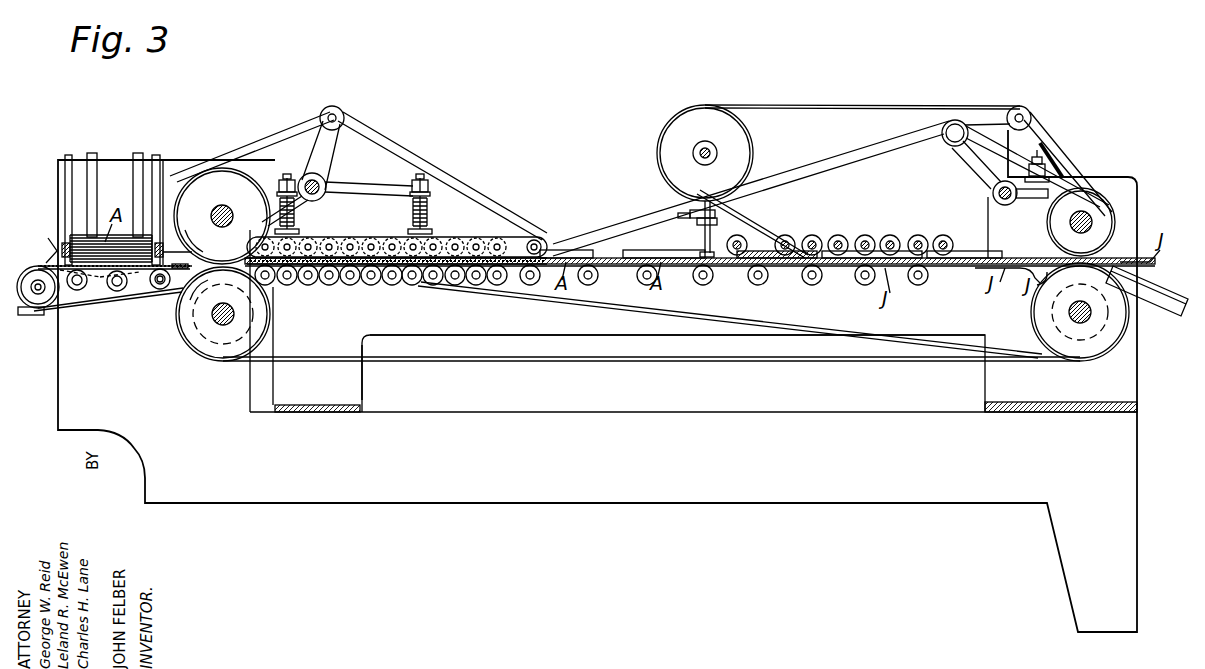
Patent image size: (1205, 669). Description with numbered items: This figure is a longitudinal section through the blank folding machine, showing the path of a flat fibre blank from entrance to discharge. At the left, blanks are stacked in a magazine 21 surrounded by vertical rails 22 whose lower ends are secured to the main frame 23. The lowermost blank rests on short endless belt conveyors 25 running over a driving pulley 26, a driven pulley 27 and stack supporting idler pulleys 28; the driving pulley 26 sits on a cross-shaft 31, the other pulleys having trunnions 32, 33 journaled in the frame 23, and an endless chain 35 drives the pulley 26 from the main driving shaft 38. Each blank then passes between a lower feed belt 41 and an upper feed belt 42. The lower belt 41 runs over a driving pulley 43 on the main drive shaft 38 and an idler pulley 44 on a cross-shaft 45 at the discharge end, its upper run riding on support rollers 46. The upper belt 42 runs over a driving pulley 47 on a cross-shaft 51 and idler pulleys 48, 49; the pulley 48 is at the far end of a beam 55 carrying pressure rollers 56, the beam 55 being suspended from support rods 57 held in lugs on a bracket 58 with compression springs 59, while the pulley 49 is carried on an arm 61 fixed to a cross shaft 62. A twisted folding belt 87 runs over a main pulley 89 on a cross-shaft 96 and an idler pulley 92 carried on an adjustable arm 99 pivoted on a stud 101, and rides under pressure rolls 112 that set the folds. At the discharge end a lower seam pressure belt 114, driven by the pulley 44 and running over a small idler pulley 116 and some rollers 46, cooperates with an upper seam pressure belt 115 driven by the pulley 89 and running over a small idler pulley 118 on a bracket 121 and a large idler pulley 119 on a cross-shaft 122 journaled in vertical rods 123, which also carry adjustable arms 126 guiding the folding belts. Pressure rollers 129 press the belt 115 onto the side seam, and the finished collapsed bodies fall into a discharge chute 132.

The magazine 21 is at (113, 158).
The rails 22 is at (68, 156).
The frame 23 is at (757, 490).
The endless belt conveyors 25 is at (42, 262).
The driving pulley 26 is at (36, 297).
The driven pulley 27 is at (157, 290).
The stack supporting idler pulleys 28 is at (72, 290).
The cross-shaft 31 is at (38, 292).
The trunnion 32 is at (156, 290).
The trunnions 33 is at (122, 283).
The endless chain 35 is at (42, 241).
The main driving shaft 38 is at (240, 318).
The lower feed belt 41 is at (458, 360).
The upper feed belt 42 is at (375, 140).
The driving pulley 43 is at (268, 313).
The idler pulley 44 is at (1094, 340).
The cross-shaft 45 is at (1072, 309).
The support rollers 46 is at (390, 286).
The driving pulley 47 is at (226, 177).
The idler pulley 48 is at (549, 240).
The idler pulley 49 is at (344, 113).
The cross-shaft 51 is at (227, 212).
The beam 55 is at (508, 234).
The pressure rollers 56 is at (392, 238).
The support rods 57 is at (287, 176).
The bracket 58 is at (368, 185).
The compression springs 59 is at (296, 215).
The arm 61 is at (325, 152).
The cross shaft 62 is at (320, 196).
The folding belt 87 is at (602, 242).
The main pulley 89 is at (1062, 223).
The idler pulley 92 is at (946, 138).
The cross-shaft 96 is at (1092, 221).
The adjustable arm 99 is at (976, 161).
The pivot stud 101 is at (995, 196).
The pressure rolls 112 is at (742, 238).
The lower seam pressure belt 114 is at (748, 322).
The upper seam pressure belt 115 is at (833, 105).
The small idler pulley 116 is at (419, 284).
The small idler pulley 118 is at (1029, 110).
The large idler pulley 119 is at (735, 140).
The bracket 121 is at (1038, 140).
The cross-shaft 122 is at (704, 149).
The vertical rods 123 is at (702, 238).
The adjustable arms 126 is at (693, 216).
The pressure rollers 129 is at (813, 237).
The discharge chute 132 is at (1165, 318).